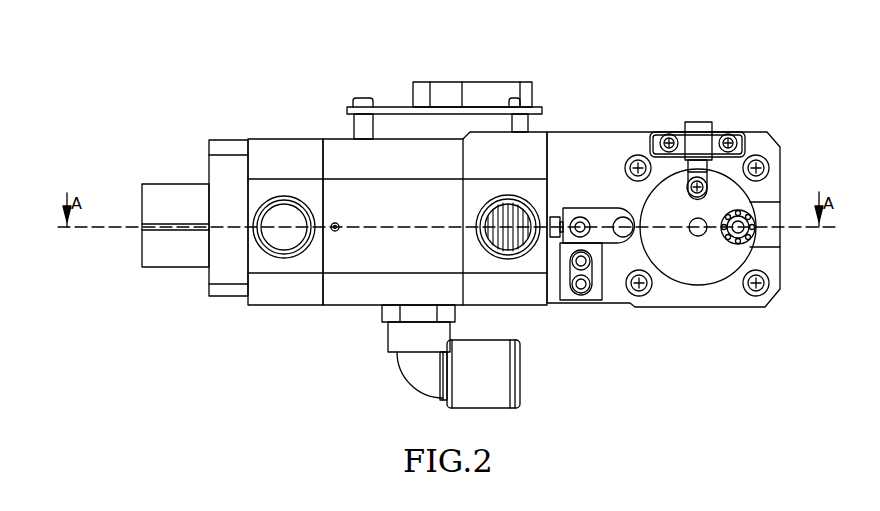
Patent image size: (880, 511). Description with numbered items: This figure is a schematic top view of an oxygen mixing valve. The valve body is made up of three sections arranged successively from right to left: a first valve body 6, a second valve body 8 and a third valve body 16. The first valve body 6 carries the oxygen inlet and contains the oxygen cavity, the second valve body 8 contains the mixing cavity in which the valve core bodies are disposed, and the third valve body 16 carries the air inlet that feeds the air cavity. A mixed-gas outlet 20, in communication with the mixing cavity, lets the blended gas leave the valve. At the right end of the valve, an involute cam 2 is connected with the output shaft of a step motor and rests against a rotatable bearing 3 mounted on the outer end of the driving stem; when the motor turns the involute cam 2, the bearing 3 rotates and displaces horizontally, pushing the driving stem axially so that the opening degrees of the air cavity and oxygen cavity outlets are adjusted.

The involute cam 2 is at (682, 251).
The bearing 3 is at (649, 294).
The first valve body 6 is at (530, 170).
The second valve body 8 is at (432, 170).
The third valve body 16 is at (285, 170).
The mixed-gas outlet 20 is at (412, 356).